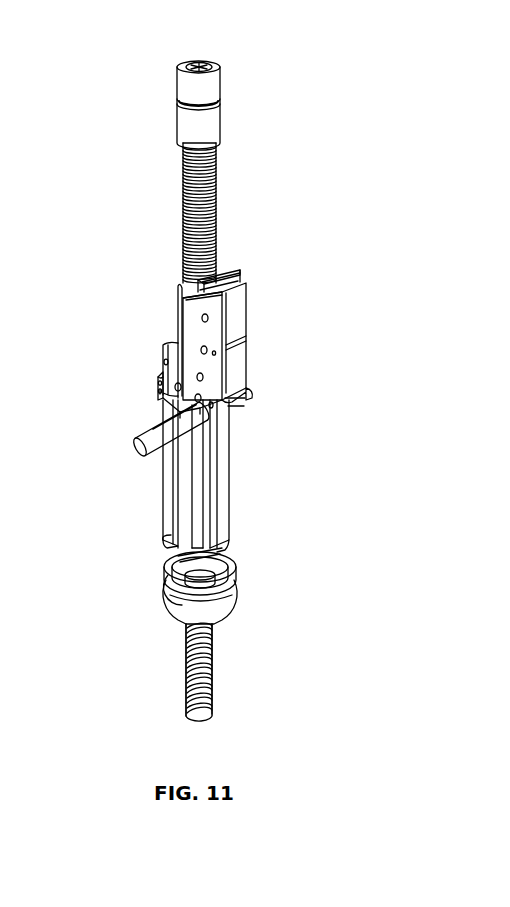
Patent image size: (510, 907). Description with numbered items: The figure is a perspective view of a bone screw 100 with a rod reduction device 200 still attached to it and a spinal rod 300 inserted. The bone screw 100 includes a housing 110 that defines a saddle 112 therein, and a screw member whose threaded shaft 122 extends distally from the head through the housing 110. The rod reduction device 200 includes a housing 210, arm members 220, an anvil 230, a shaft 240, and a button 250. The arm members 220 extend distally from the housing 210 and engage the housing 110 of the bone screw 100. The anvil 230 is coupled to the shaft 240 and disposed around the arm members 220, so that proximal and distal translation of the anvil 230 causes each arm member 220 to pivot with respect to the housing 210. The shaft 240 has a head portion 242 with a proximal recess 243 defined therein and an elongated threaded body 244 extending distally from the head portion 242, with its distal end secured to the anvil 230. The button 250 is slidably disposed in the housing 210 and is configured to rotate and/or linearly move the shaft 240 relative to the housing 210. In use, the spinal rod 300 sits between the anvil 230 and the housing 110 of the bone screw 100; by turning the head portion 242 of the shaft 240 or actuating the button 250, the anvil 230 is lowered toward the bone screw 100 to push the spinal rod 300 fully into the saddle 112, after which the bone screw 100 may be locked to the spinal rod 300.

The bone screw 100 is at (265, 603).
The housing 110 is at (172, 603).
The saddle 112 is at (172, 565).
The threaded shaft 122 is at (213, 672).
The rod reduction device 200 is at (104, 160).
The housing 210 is at (178, 303).
The arm members 220 is at (172, 508).
The anvil 230 is at (185, 407).
The shaft 240 is at (236, 185).
The head portion 242 is at (218, 116).
The proximal recess 243 is at (193, 65).
The elongated threaded body 244 is at (217, 232).
The button 250 is at (236, 302).
The spinal rod 300 is at (150, 443).